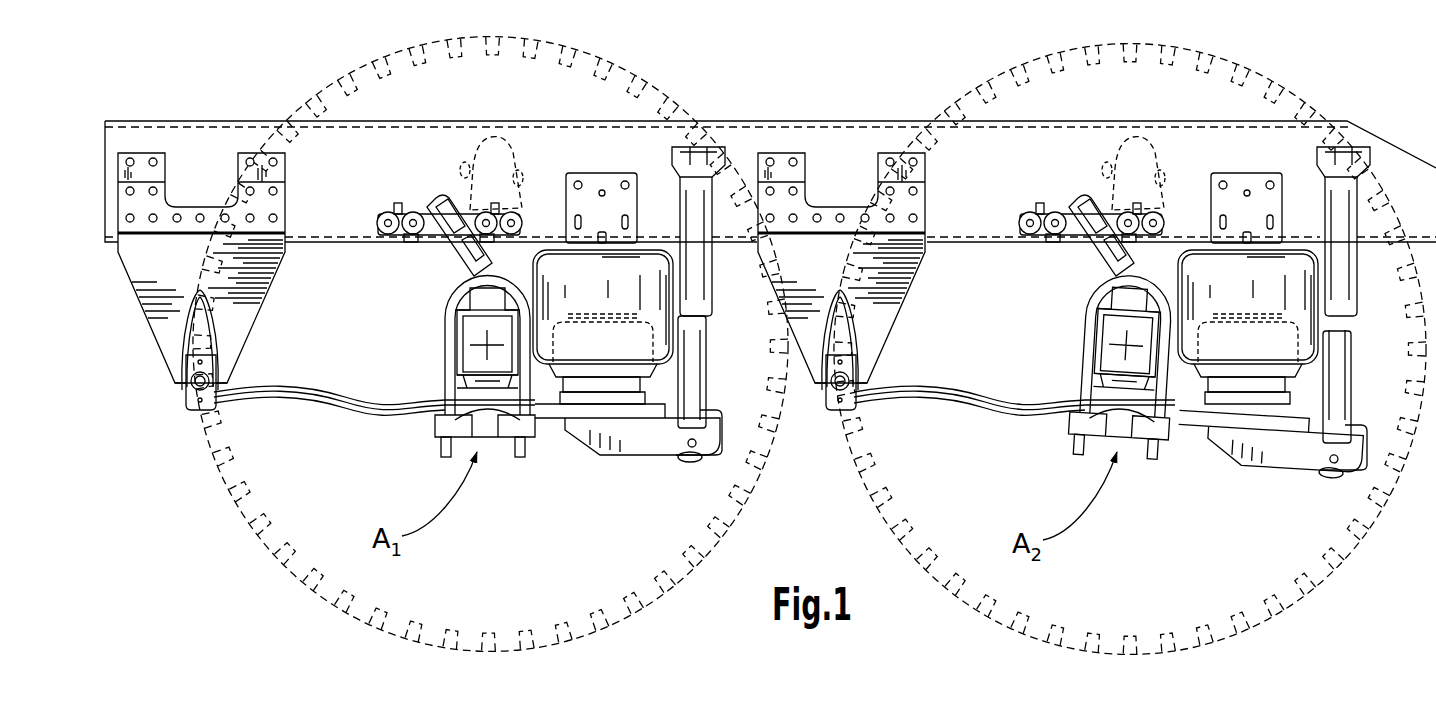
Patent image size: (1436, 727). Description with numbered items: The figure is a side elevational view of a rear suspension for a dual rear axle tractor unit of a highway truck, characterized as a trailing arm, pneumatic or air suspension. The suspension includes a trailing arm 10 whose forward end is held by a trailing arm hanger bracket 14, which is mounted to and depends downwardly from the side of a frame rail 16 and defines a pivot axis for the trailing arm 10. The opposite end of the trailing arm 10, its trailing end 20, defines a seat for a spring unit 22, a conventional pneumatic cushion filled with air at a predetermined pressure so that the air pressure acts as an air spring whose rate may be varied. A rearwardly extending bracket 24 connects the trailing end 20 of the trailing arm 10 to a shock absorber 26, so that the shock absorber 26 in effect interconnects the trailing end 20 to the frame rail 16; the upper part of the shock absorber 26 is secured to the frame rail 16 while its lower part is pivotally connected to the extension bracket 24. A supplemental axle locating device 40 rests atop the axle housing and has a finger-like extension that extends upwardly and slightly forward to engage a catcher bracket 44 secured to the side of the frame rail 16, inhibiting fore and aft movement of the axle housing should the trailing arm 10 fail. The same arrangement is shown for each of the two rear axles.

The trailing arm 10 is at (200, 292).
The trailing arm hanger bracket 14 is at (131, 310).
The frame rail 16 is at (342, 194).
The trailing end 20 is at (592, 405).
The spring unit 22 is at (614, 305).
The rearwardly extending bracket 24 is at (670, 440).
The shock absorber 26 is at (707, 325).
The supplemental axle locating device 40 is at (445, 256).
The catcher bracket 44 is at (411, 199).